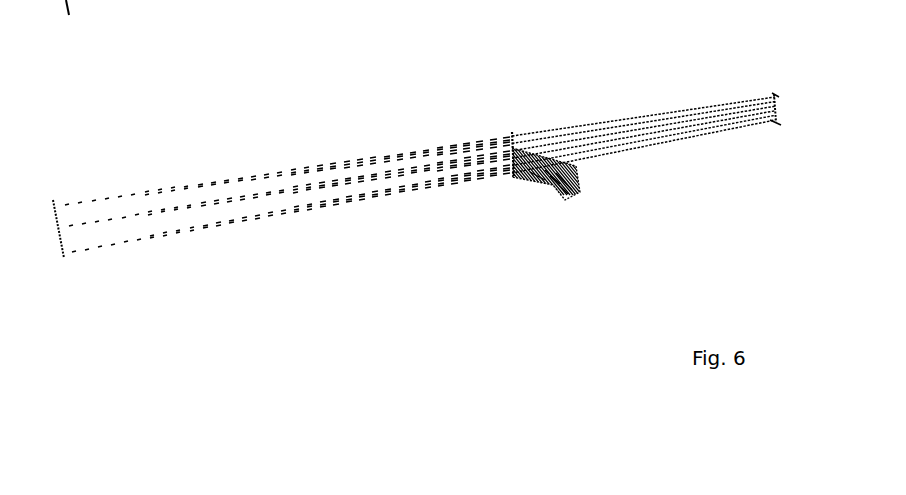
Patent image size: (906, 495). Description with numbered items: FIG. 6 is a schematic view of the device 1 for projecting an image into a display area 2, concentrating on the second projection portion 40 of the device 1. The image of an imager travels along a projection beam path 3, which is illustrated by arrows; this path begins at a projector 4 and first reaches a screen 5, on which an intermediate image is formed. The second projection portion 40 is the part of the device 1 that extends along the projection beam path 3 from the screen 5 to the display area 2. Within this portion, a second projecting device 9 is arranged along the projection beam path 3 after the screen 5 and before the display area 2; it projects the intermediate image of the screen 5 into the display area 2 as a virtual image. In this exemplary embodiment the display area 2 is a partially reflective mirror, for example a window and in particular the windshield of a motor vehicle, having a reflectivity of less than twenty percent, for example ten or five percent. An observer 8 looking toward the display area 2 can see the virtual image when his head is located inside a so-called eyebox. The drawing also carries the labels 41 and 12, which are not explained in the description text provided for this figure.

The device 1 is at (52, 216).
The display area 2 is at (512, 135).
The projection beam path 3 is at (466, 92).
The projector 4 is at (777, 97).
The end cap edge 41 is at (773, 98).
The screen 5 is at (563, 180).
The observer 8 is at (803, 126).
The second projecting device 9 is at (590, 180).
The edge strip 12 is at (562, 184).
The second projection portion 40 is at (370, 341).